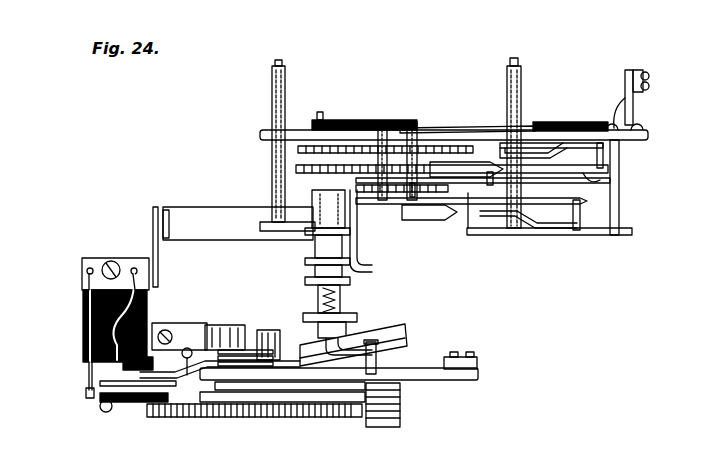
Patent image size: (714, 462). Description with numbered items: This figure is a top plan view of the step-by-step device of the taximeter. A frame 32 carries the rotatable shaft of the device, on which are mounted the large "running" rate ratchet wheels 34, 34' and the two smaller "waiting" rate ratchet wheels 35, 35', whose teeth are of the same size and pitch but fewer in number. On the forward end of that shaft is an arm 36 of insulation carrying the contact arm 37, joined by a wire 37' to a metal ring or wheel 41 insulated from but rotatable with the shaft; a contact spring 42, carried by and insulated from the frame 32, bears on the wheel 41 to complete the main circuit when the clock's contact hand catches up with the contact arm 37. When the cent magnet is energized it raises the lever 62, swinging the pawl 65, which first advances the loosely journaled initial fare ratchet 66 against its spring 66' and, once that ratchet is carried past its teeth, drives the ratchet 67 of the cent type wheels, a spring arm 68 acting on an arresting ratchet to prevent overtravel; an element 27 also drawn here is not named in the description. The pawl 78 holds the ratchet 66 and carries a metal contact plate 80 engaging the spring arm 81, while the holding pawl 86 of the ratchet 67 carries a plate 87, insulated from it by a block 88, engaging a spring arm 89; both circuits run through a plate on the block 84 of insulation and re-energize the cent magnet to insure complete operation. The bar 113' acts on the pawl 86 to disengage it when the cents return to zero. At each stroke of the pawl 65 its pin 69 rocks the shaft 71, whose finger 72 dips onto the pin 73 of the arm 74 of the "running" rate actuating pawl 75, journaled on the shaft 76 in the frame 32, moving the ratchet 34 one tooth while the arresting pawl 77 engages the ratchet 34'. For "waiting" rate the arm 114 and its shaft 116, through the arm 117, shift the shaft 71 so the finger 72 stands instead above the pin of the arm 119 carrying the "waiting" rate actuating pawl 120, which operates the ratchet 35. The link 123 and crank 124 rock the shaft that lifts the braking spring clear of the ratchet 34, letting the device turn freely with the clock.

The toothed rack 27 is at (218, 418).
The frame 32 is at (272, 181).
The running rate ratchet wheel 34 is at (415, 186).
The running rate ratchet wheel 34' is at (435, 140).
The waiting rate ratchet wheel 35 is at (390, 236).
The waiting rate ratchet wheel 35' is at (385, 169).
The arm of insulation 36 is at (312, 124).
The contact arm 37 is at (328, 91).
The wire 37' is at (460, 110).
The metal ring or wheel 41 is at (416, 127).
The contact spring 42 is at (462, 127).
The lever 62 is at (441, 382).
The pawl 65 is at (282, 380).
The initial fare ratchet 66 is at (254, 393).
The spring 66' is at (239, 336).
The ratchet 67 is at (188, 395).
The spring arm 68 is at (292, 403).
The pin 69 is at (378, 362).
The shaft 71 is at (322, 252).
The finger 72 is at (474, 228).
The pin 73 is at (597, 182).
The arm 74 is at (600, 180).
The running rate actuating pawl 75 is at (470, 163).
The shaft 76 is at (548, 228).
The arresting pawl 77 is at (508, 143).
The pawl or detent 78 is at (196, 345).
The metal contact plate 80 is at (160, 350).
The spring arm 81 is at (140, 292).
The block of insulation 84 is at (83, 274).
The holding pawl 86 is at (128, 403).
The plate 87 is at (100, 408).
The block 88 is at (142, 404).
The spring arm 89 is at (88, 374).
The bar 113' is at (381, 345).
The arm 114 is at (158, 262).
The shaft 116 is at (430, 184).
The arm 117 is at (312, 273).
The arm 119 is at (568, 198).
The waiting rate actuating pawl 120 is at (435, 221).
The link 123 is at (644, 74).
The crank 124 is at (633, 104).